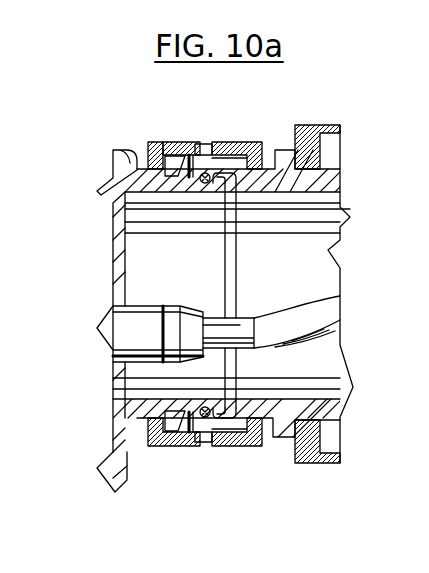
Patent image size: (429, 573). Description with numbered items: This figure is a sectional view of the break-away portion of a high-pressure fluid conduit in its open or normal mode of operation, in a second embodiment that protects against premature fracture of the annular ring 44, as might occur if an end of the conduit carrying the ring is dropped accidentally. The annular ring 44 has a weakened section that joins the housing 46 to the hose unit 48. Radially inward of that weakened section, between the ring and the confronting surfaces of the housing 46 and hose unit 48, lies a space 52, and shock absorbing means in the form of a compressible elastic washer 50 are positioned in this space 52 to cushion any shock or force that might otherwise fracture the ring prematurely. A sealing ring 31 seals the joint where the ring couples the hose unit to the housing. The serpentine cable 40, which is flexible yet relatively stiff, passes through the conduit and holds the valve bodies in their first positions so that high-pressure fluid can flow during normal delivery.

The serpentine cable 40 is at (341, 308).
The housing 46 is at (112, 153).
The space 52 is at (150, 143).
The compressible elastic washer 50 is at (172, 143).
The annular ring 44 is at (238, 143).
The sealing ring 31 is at (231, 446).
The hose unit 48 is at (332, 174).